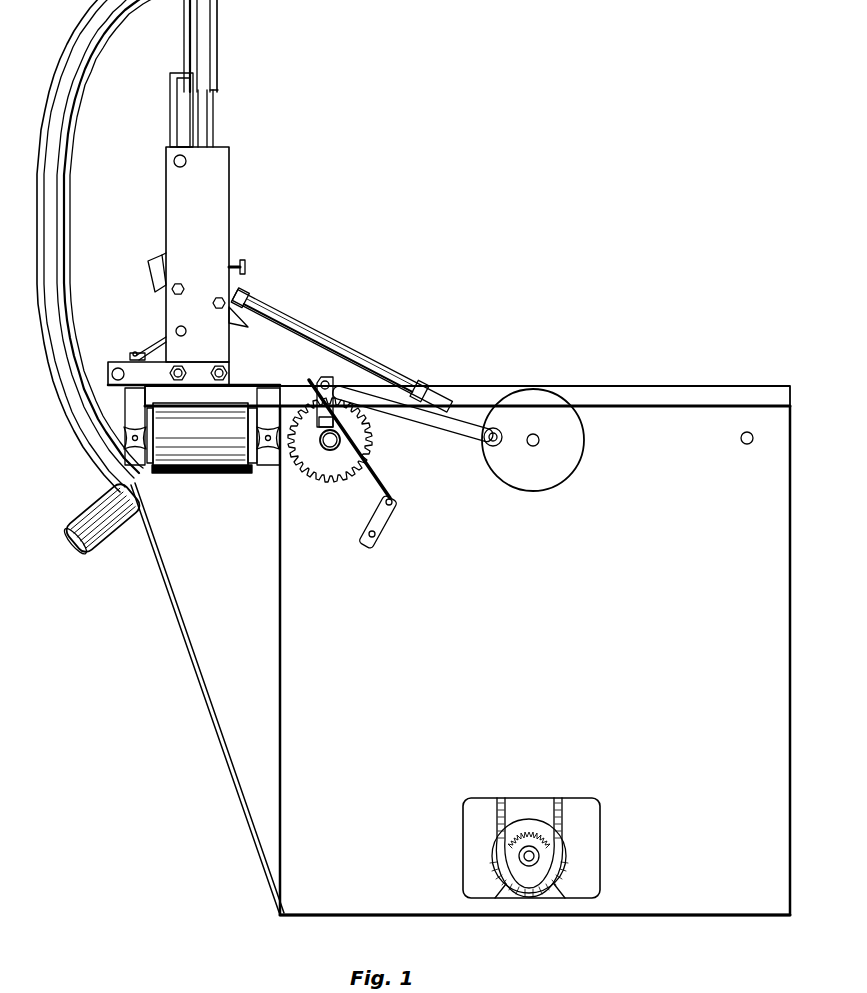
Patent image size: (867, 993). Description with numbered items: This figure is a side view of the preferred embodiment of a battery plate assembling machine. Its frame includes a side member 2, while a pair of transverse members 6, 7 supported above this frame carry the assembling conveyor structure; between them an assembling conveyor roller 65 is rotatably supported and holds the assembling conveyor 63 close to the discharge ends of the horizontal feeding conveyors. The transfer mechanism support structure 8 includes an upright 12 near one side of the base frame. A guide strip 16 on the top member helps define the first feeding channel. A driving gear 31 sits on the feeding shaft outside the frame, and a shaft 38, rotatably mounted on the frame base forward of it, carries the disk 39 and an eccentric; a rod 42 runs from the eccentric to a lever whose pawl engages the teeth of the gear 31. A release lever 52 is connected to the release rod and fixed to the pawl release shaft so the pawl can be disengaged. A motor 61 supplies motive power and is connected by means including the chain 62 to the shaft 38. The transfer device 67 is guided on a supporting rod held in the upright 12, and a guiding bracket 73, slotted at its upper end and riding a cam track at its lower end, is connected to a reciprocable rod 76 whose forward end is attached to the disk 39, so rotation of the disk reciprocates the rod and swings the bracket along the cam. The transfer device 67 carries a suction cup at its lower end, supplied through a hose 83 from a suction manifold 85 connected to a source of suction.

The side member 2 is at (294, 638).
The transverse member 6 is at (270, 470).
The transverse member 7 is at (124, 415).
The transfer mechanism support structure 8 is at (238, 179).
The upright 12 is at (213, 233).
The guide strip 16 is at (620, 393).
The driving gear 31 is at (326, 465).
The shaft 38 is at (538, 438).
The disk 39 is at (556, 465).
The rod 42 is at (413, 408).
The release lever 52 is at (385, 523).
The motor 61 is at (572, 855).
The chain 62 is at (562, 812).
The assembling conveyor 63 is at (186, 472).
The assembling conveyor roller 65 is at (257, 473).
The transfer device 67 is at (213, 133).
The guiding bracket 73 is at (172, 95).
The reciprocable rod 76 is at (318, 336).
The hose 83 is at (214, 45).
The suction manifold 85 is at (136, 522).